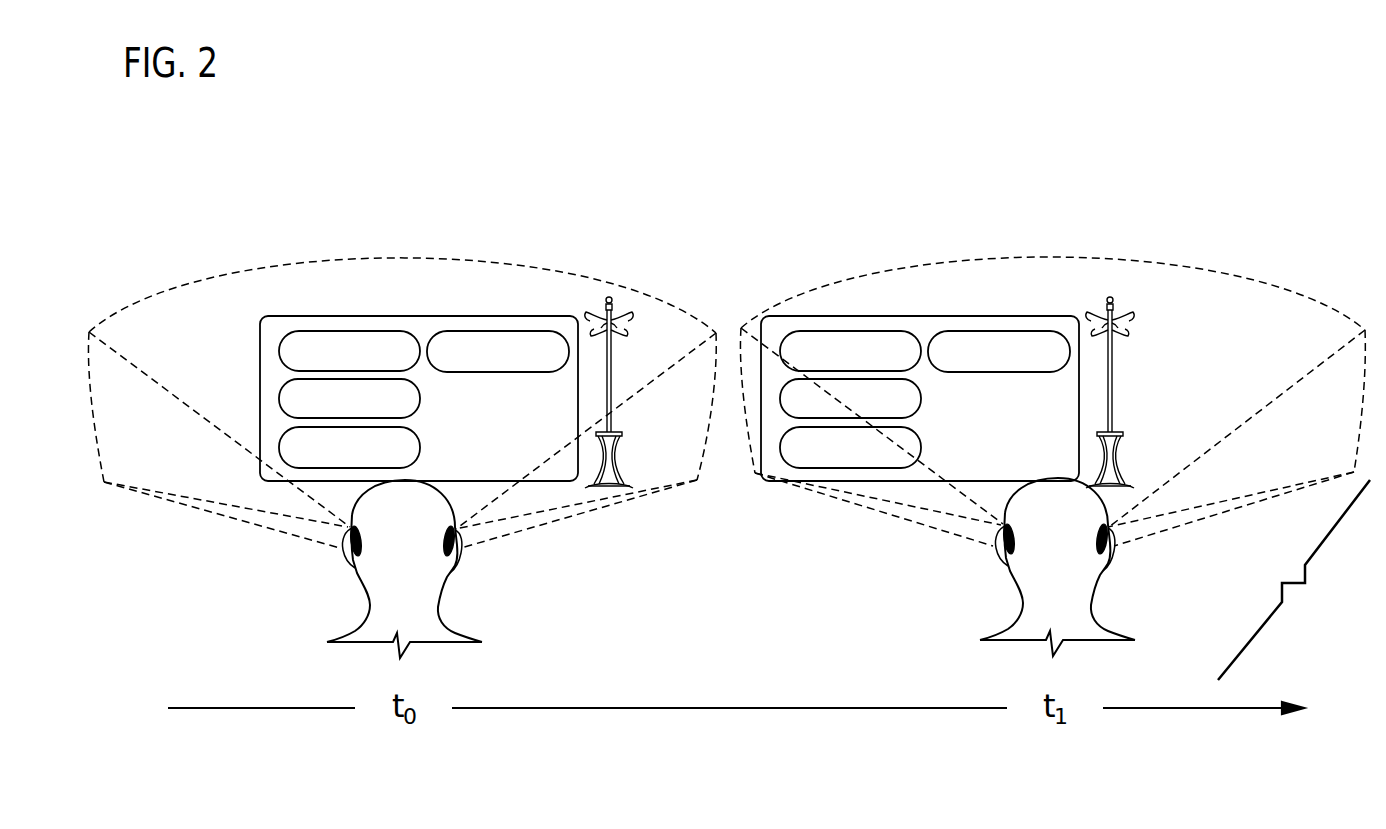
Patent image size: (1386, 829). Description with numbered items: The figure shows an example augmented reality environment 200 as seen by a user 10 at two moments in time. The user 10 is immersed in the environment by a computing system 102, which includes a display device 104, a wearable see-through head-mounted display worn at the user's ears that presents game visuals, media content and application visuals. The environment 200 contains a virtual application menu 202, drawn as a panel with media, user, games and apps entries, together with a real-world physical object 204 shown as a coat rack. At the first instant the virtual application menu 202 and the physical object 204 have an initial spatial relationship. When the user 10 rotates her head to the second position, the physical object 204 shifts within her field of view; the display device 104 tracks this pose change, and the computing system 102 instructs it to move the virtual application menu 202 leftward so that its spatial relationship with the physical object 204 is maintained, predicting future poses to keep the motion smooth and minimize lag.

The user 10 is at (415, 531).
The computing system 102 is at (224, 634).
The display device 104 is at (358, 567).
The augmented reality environment 200 is at (649, 292).
The virtual application menu 202 is at (450, 316).
The physical object 204 is at (613, 382).